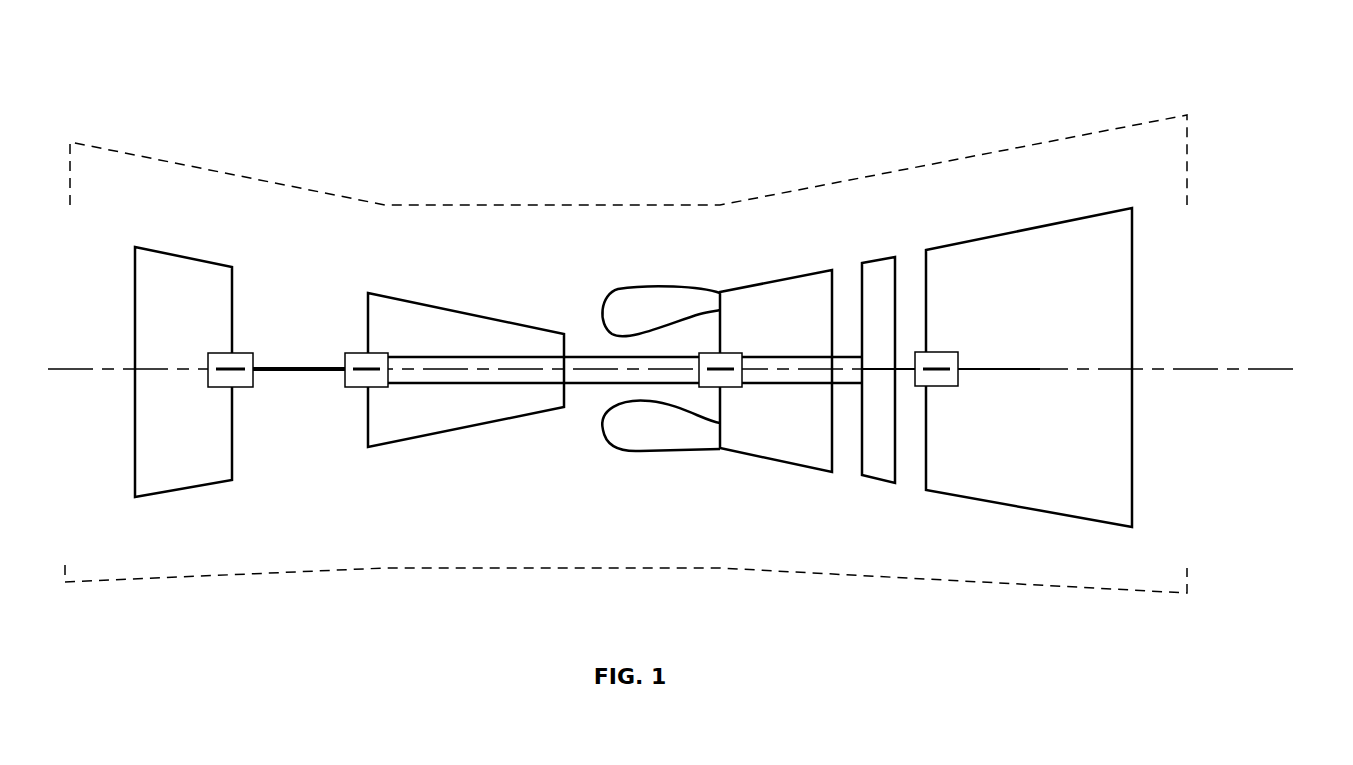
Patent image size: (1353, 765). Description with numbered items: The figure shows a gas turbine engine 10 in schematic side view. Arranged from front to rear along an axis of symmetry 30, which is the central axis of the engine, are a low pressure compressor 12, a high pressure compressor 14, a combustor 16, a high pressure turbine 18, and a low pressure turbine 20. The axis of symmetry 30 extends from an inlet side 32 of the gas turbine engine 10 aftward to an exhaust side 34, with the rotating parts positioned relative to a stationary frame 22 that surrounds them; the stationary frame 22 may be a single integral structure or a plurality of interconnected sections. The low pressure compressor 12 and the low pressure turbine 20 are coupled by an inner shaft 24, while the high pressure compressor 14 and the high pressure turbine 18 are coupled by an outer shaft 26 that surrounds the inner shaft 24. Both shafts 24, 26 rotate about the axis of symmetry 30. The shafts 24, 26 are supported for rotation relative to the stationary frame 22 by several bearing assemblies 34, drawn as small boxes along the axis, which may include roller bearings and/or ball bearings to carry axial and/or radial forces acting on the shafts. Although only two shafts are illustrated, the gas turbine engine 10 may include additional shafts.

The gas turbine engine 10 is at (428, 113).
The low pressure compressor 12 is at (190, 488).
The high pressure compressor 14 is at (415, 443).
The combustor 16 is at (650, 455).
The high pressure turbine 18 is at (778, 466).
The low pressure turbine 20 is at (863, 253).
The stationary frame 22 is at (1070, 135).
The inner shaft 24 is at (313, 365).
The outer shaft 26 is at (590, 385).
The axis of symmetry 30 is at (1193, 372).
The inlet side 32 is at (115, 278).
The bearing assembly 34 is at (232, 390).